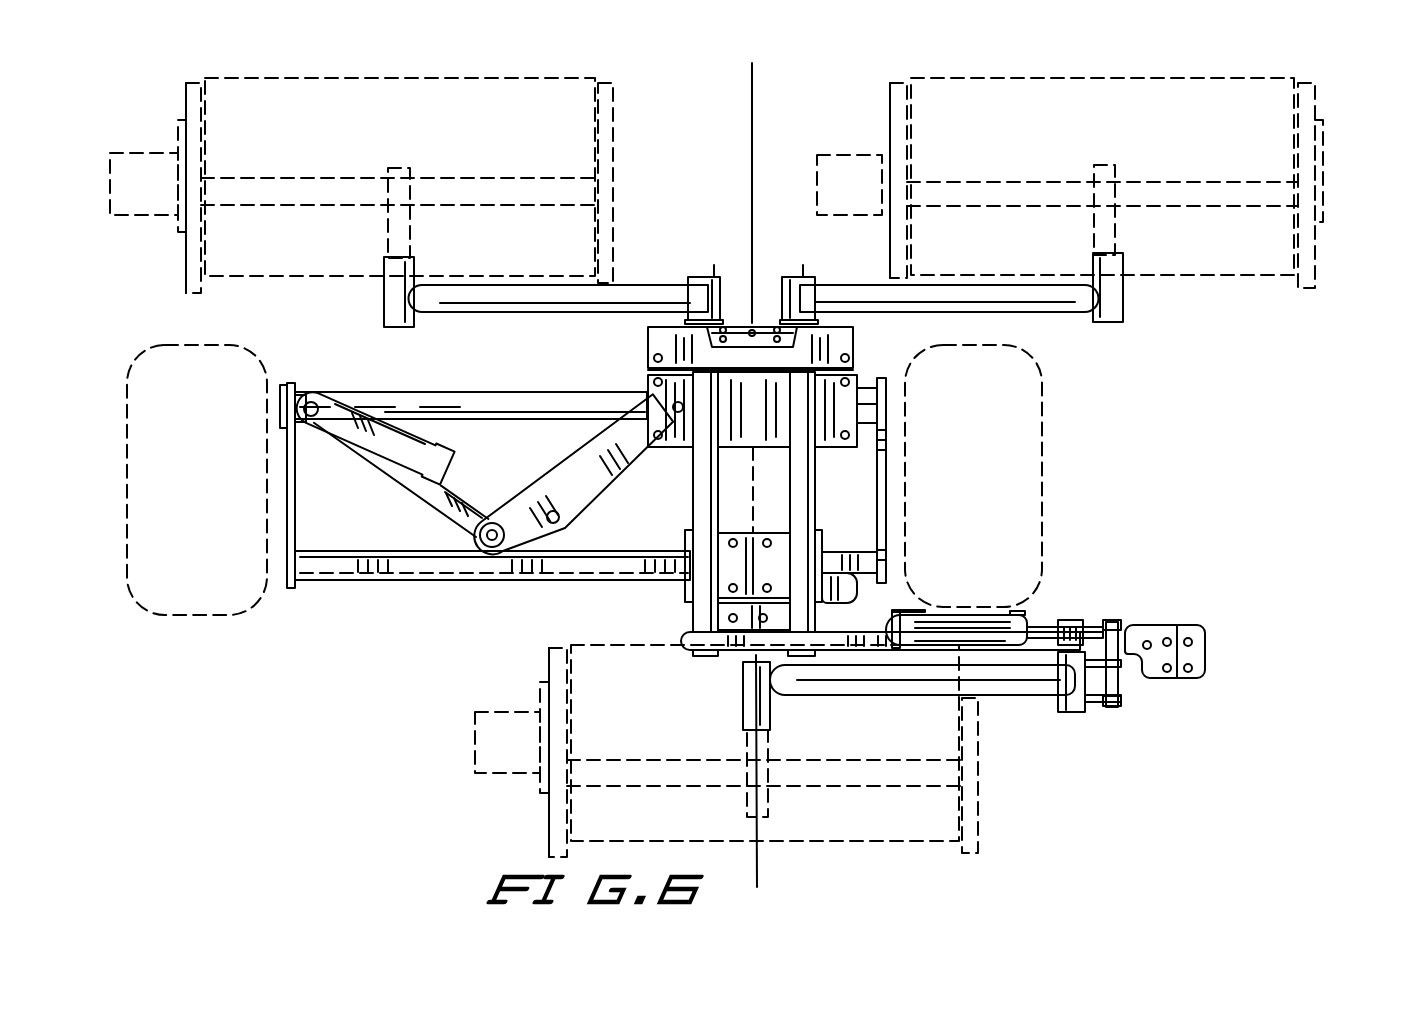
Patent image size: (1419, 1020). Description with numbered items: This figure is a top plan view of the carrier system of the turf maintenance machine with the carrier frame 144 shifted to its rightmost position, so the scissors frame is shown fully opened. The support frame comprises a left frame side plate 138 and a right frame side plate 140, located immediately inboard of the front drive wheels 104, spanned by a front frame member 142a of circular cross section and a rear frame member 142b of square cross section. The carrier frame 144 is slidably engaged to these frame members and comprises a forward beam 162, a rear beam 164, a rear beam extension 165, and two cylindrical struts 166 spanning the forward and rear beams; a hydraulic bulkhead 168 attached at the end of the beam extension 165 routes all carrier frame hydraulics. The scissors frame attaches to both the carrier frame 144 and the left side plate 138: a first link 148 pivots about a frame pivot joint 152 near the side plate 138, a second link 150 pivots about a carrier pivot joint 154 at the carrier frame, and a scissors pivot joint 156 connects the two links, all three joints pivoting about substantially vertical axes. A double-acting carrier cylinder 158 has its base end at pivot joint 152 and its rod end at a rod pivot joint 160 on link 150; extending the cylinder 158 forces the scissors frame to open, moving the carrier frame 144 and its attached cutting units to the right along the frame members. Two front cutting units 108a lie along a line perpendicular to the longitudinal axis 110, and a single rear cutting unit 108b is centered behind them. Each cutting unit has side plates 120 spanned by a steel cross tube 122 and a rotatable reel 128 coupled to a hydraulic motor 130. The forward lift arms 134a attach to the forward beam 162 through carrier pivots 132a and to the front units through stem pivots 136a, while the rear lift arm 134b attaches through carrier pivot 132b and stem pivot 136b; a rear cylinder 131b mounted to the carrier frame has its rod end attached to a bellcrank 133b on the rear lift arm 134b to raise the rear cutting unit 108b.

The front drive wheels 104 is at (1042, 431).
The front cutting units 108a is at (178, 114).
The rear cutting unit 108b is at (465, 735).
The longitudinal axis 110 is at (750, 109).
The side plates 120 is at (890, 104).
The steel cross tube 122 is at (348, 177).
The rotatable reel 128 is at (243, 278).
The hydraulic motor 130 is at (157, 216).
The rear cylinder 131b is at (985, 611).
The carrier pivot 132a is at (718, 277).
The carrier pivot 132b is at (1090, 711).
The bellcrank 133b is at (1120, 700).
The forward lift arms 134a is at (542, 284).
The rear lift arm 134b is at (1032, 698).
The stem pivot 136a is at (385, 263).
The stem pivot 136b is at (770, 726).
The left frame side plate 138 is at (288, 455).
The right frame side plate 140 is at (887, 440).
The front frame member 142a is at (510, 399).
The rear frame member 142b is at (530, 582).
The carrier frame 144 is at (858, 493).
The first link 148 is at (412, 482).
The second link 150 is at (595, 490).
The frame pivot joint 152 is at (308, 396).
The carrier pivot joint 154 is at (672, 400).
The scissors pivot joint 156 is at (492, 548).
The carrier cylinder 158 is at (397, 438).
The rod pivot joint 160 is at (553, 510).
The forward beam 162 is at (855, 349).
The rear beam 164 is at (683, 590).
The rear beam extension 165 is at (740, 651).
The cylindrical struts 166 is at (914, 588).
The hydraulic bulkhead 168 is at (1205, 654).